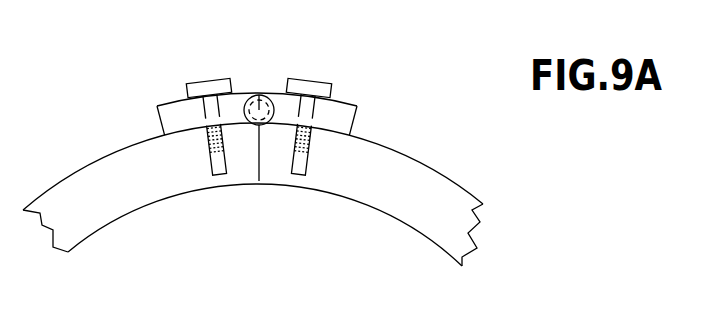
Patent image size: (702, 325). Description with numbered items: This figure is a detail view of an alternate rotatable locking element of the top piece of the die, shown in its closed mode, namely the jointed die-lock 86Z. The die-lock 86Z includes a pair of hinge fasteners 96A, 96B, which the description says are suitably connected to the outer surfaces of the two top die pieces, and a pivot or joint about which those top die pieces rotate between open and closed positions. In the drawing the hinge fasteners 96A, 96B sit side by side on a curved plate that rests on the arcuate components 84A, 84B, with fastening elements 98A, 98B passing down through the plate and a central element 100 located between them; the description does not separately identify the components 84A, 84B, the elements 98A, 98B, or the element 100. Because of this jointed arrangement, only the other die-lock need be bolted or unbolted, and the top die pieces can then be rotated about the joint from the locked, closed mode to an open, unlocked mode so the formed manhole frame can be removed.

The ring segment (left) 84A is at (95, 183).
The ring segment (right) 84B is at (443, 190).
The jointed die-lock 86Z is at (237, 103).
The hinge fastener 96A is at (162, 119).
The hinge fastener 96B is at (358, 113).
The fastener (left) 98A is at (209, 81).
The fastener (right) 98B is at (317, 81).
The pivot pin 100 is at (259, 95).